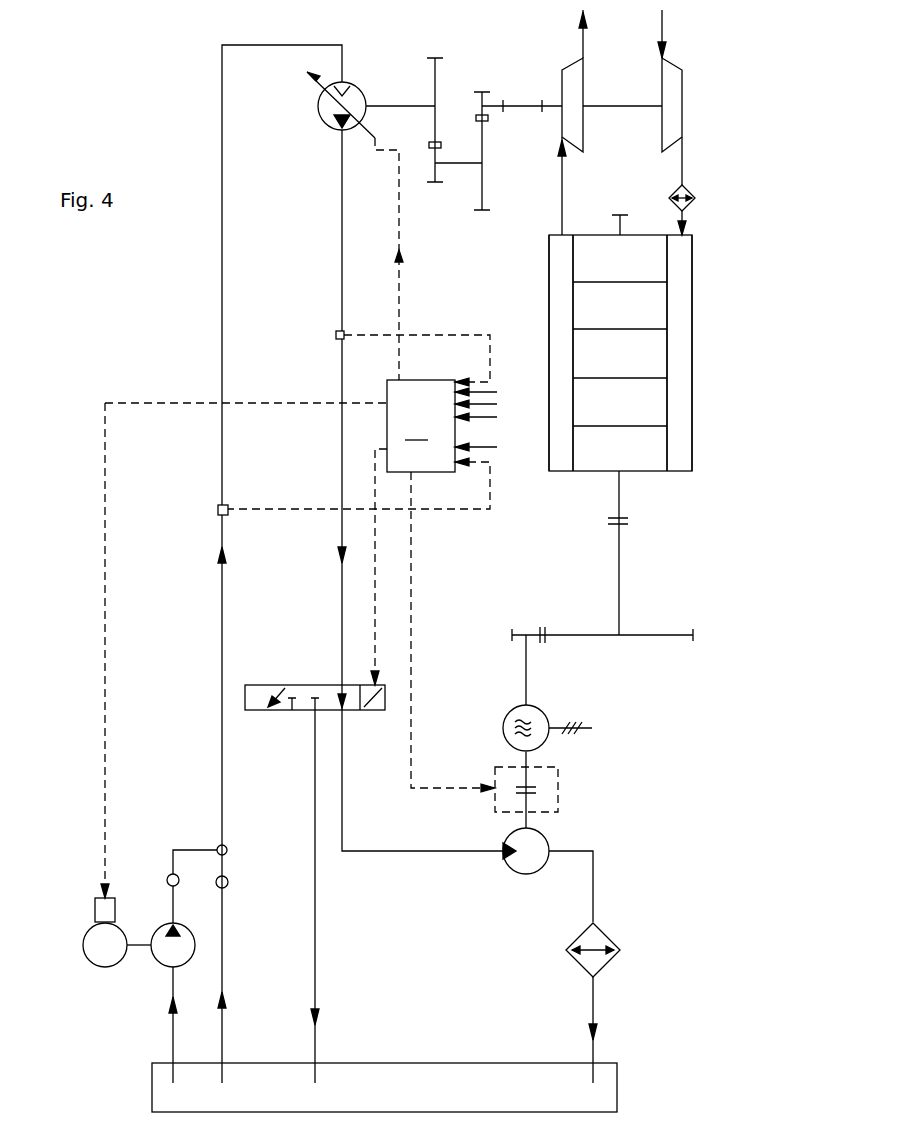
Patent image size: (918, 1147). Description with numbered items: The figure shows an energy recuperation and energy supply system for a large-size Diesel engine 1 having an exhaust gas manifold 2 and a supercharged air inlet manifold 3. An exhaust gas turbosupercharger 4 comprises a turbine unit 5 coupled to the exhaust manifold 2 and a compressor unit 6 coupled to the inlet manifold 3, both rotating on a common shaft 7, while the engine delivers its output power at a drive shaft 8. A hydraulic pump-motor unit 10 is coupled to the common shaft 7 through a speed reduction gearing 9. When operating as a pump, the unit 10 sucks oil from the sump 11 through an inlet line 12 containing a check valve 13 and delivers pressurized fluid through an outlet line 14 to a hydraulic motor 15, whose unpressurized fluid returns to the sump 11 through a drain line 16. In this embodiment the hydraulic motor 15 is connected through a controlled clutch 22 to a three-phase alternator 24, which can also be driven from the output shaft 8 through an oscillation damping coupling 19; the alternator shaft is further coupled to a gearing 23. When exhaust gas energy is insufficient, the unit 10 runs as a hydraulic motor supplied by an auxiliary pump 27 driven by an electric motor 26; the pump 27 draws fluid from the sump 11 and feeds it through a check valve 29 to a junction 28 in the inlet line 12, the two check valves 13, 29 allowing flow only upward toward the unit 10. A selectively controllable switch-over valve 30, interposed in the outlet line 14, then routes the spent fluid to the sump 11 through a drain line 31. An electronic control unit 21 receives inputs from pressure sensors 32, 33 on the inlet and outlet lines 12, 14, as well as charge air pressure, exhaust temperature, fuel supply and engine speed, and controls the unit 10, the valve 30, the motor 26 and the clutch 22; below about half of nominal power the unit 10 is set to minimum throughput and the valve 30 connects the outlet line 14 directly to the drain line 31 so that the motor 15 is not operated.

The Diesel engine 1 is at (653, 355).
The exhaust gas manifold 2 is at (555, 303).
The air inlet manifold 3 is at (683, 302).
The exhaust gas turbosupercharger 4 is at (630, 91).
The turbine unit 5 is at (570, 87).
The compressor unit 6 is at (675, 85).
The common shaft 7 is at (622, 107).
The drive shaft 8 is at (620, 500).
The speed reduction gearing 9 is at (453, 92).
The hydraulic pump-motor unit 10 is at (357, 87).
The sump 11 is at (420, 1075).
The inlet line 12 is at (222, 296).
The check valve 13 is at (227, 887).
The outlet line 14 is at (340, 296).
The hydraulic motor 15 is at (520, 877).
The drain line 16 is at (594, 895).
The oscillation damping coupling 19 is at (628, 522).
The control unit 21 is at (317, 634).
The controlled clutch 22 is at (558, 787).
The gearing 23 is at (557, 657).
The alternator 24 is at (503, 727).
The electric motor 26 is at (98, 970).
The auxiliary pump 27 is at (152, 935).
The junction 28 is at (195, 850).
The check valve 29 is at (168, 876).
The selectively controllable valve 30 is at (302, 685).
The drain line 31 is at (315, 932).
The pressure sensor 32 is at (228, 503).
The pressure sensor 33 is at (344, 331).